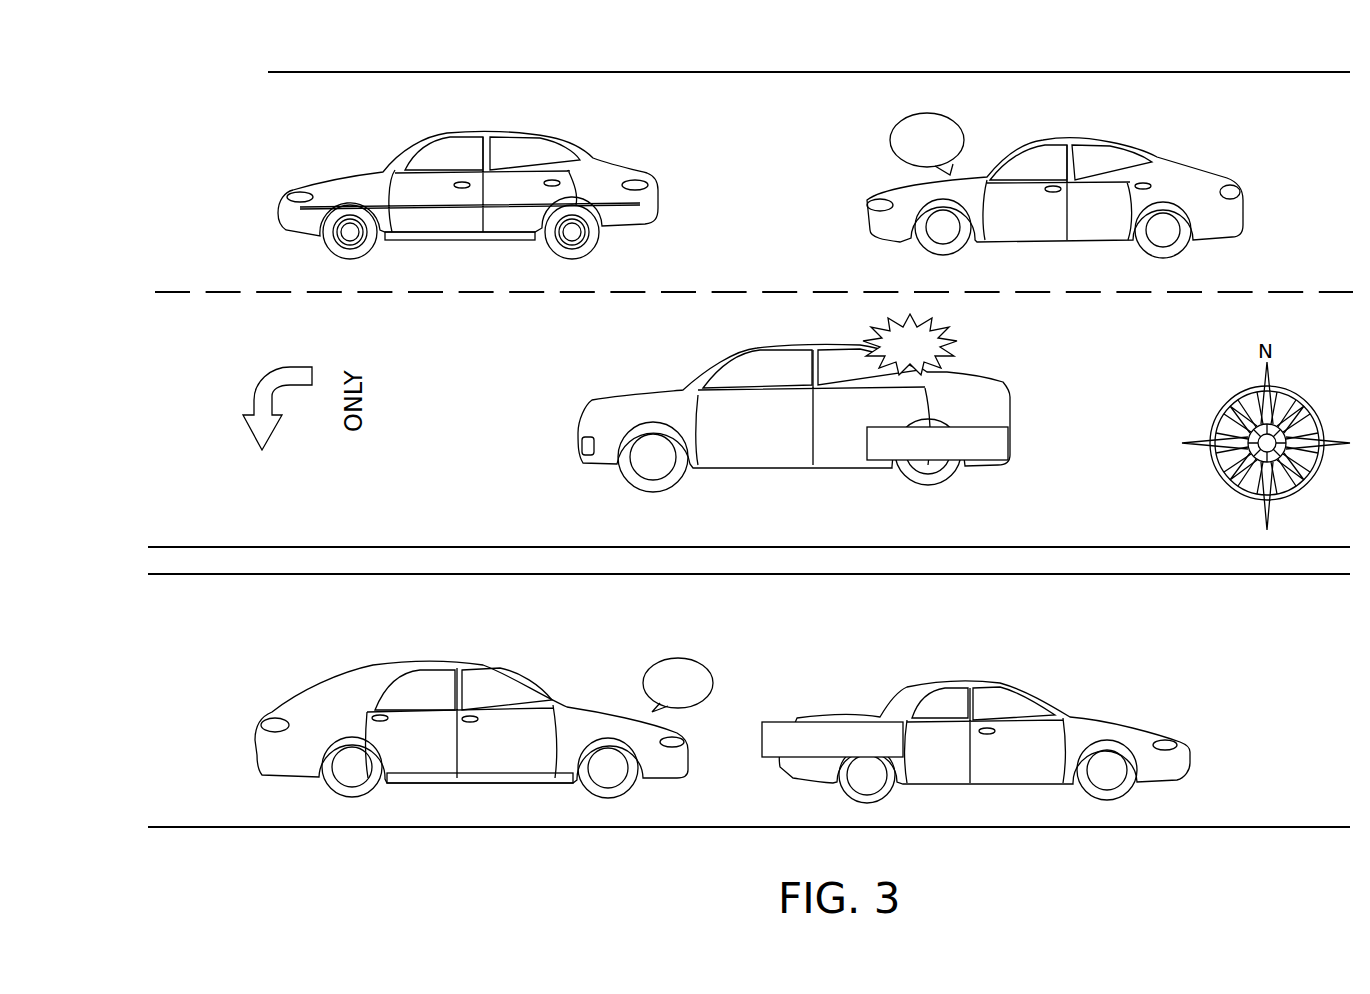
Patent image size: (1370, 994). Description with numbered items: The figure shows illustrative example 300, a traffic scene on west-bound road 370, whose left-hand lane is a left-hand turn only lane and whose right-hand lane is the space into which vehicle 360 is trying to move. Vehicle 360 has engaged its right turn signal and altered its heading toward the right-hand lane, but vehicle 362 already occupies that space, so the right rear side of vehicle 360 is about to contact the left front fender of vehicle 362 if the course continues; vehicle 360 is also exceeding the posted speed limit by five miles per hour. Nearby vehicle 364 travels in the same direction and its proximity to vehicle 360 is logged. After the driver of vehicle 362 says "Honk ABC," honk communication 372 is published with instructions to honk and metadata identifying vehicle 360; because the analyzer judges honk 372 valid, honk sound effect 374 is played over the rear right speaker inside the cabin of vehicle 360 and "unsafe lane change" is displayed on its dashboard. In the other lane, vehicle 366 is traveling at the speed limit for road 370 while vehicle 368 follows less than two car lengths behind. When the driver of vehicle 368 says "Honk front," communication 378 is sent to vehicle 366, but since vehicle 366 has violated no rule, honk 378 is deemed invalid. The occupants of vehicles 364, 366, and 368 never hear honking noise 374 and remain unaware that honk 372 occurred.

The illustrative example 300 is at (200, 127).
The vehicle 360 is at (578, 437).
The vehicle 362 is at (890, 190).
The vehicle 364 is at (363, 172).
The vehicle 366 is at (1100, 720).
The vehicle 368 is at (338, 683).
The west-bound road 370 is at (1322, 292).
The honk communication 372 is at (892, 130).
The honk sound effect 374 is at (952, 340).
The honk communication 378 is at (643, 673).